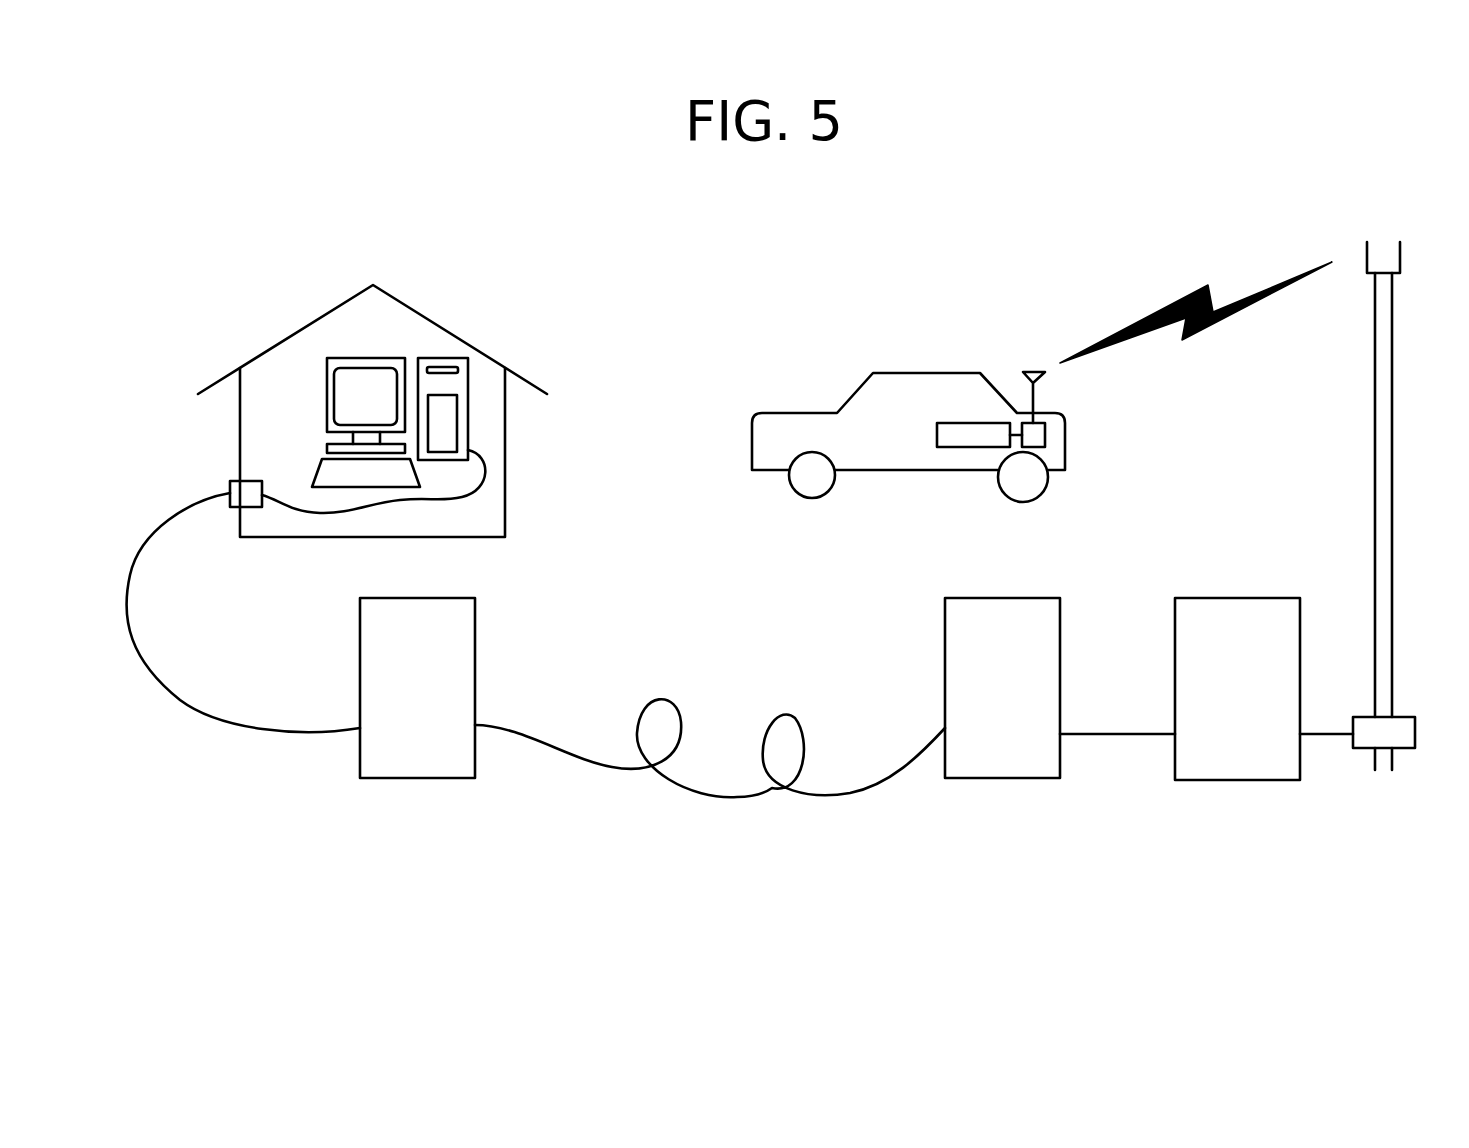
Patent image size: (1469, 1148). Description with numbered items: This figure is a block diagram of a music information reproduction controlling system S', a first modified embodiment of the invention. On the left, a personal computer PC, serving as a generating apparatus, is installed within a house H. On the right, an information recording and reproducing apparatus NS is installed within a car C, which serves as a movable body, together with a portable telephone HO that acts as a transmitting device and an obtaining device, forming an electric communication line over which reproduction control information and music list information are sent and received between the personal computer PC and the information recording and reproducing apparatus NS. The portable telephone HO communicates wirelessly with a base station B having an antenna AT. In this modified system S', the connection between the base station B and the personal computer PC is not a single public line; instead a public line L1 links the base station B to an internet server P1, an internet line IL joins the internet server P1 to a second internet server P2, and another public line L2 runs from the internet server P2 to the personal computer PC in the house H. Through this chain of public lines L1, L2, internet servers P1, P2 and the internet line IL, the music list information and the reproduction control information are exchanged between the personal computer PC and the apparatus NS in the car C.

The house H is at (445, 328).
The personal computer PC is at (475, 422).
The public line L2 is at (143, 652).
The internet server P2 is at (475, 622).
The internet line IL is at (700, 793).
The music information reproduction controlling system S' is at (524, 864).
The car C is at (1065, 432).
The information recording and reproducing apparatus NS is at (970, 447).
The portable telephone HO is at (1027, 420).
The antenna AT is at (1392, 382).
The internet server P1 is at (1060, 622).
The public line L1 is at (1115, 734).
The base station B is at (1300, 622).